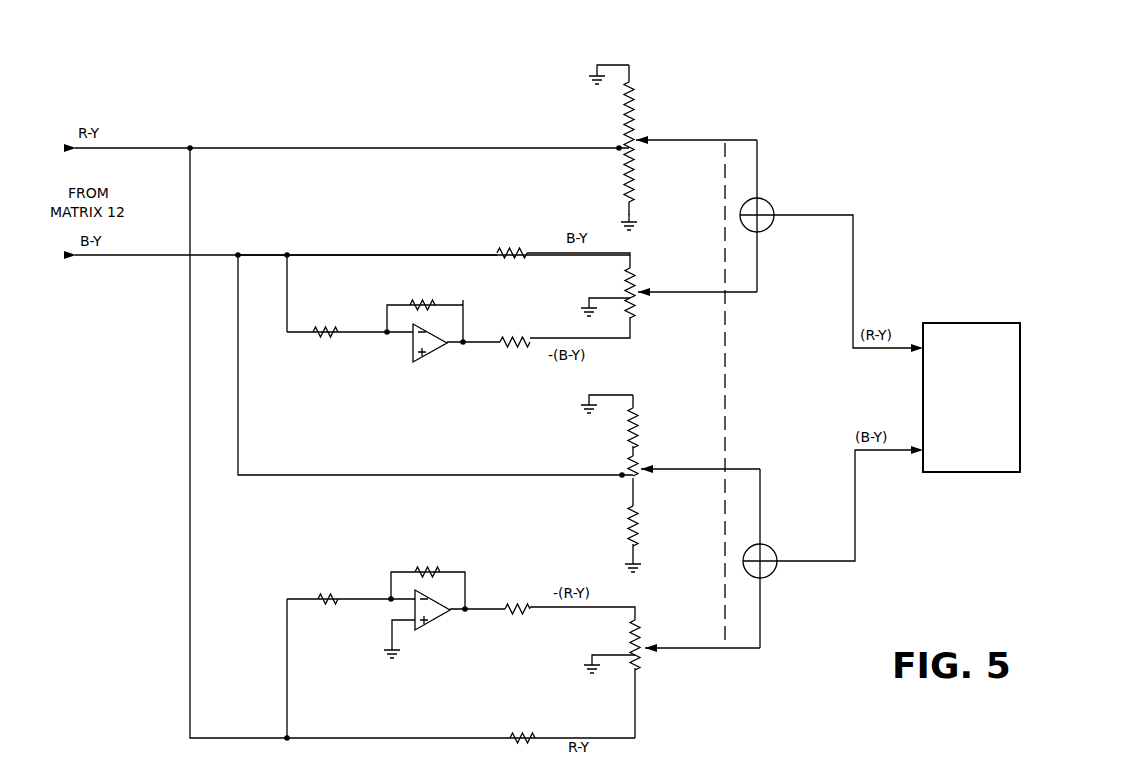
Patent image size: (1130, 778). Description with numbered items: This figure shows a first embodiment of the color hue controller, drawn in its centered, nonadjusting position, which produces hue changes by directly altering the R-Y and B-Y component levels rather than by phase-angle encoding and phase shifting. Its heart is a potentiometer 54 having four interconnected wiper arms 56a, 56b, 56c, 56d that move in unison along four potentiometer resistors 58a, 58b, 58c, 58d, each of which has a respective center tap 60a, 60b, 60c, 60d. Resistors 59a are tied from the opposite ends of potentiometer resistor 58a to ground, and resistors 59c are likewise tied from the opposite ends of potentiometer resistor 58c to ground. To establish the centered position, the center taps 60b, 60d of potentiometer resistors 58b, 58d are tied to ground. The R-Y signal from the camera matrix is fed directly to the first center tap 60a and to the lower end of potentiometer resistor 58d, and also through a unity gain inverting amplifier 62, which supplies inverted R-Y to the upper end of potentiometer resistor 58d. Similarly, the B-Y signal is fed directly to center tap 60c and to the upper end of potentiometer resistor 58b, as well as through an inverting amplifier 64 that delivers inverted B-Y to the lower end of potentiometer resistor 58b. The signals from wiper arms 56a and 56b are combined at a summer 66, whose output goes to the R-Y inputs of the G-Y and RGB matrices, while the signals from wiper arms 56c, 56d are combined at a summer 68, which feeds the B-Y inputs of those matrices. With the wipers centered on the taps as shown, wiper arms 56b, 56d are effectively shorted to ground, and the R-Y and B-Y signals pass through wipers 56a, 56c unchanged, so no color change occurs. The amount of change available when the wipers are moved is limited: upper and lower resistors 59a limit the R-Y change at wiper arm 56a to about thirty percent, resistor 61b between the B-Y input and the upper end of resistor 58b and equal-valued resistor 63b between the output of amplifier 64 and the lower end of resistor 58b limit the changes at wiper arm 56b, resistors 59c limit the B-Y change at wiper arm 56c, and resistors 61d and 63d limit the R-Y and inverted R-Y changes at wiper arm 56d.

The potentiometer 54 is at (655, 145).
The wiper arm 56a is at (712, 140).
The wiper arm 56b is at (688, 297).
The wiper arm 56c is at (697, 472).
The wiper arm 56d is at (708, 652).
The potentiometer resistor 58a is at (630, 138).
The potentiometer resistor 58b is at (640, 288).
The potentiometer resistor 58c is at (642, 464).
The potentiometer resistor 58d is at (645, 644).
The resistors 59a is at (632, 100).
The resistors 59c is at (622, 461).
The center tap 60a is at (619, 150).
The center tap 60b is at (622, 297).
The center tap 60c is at (622, 473).
The center tap 60d is at (625, 655).
The resistor 61b is at (505, 248).
The resistor 61d is at (520, 733).
The unity gain inverting amplifier 62 is at (440, 620).
The resistor 63b is at (518, 347).
The resistor 63d is at (518, 603).
The inverting amplifier 64 is at (440, 352).
The summer 66 is at (768, 206).
The summer 68 is at (770, 552).